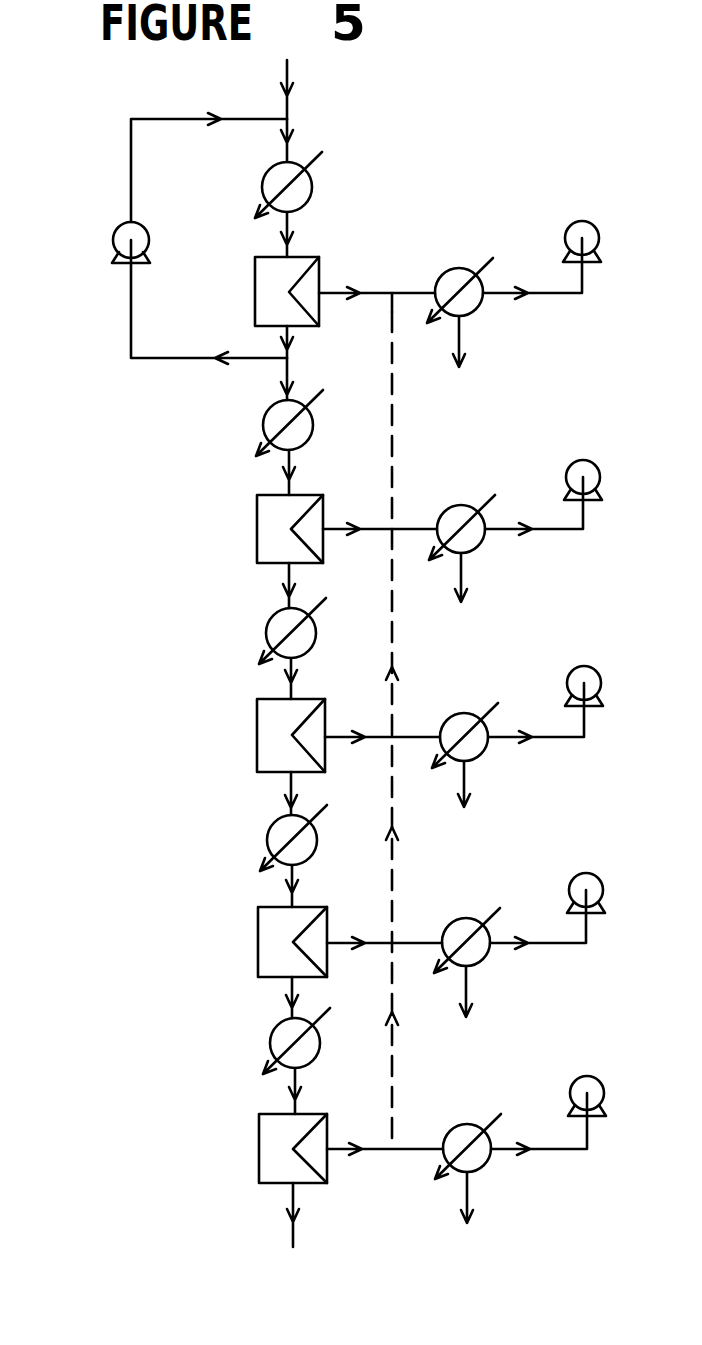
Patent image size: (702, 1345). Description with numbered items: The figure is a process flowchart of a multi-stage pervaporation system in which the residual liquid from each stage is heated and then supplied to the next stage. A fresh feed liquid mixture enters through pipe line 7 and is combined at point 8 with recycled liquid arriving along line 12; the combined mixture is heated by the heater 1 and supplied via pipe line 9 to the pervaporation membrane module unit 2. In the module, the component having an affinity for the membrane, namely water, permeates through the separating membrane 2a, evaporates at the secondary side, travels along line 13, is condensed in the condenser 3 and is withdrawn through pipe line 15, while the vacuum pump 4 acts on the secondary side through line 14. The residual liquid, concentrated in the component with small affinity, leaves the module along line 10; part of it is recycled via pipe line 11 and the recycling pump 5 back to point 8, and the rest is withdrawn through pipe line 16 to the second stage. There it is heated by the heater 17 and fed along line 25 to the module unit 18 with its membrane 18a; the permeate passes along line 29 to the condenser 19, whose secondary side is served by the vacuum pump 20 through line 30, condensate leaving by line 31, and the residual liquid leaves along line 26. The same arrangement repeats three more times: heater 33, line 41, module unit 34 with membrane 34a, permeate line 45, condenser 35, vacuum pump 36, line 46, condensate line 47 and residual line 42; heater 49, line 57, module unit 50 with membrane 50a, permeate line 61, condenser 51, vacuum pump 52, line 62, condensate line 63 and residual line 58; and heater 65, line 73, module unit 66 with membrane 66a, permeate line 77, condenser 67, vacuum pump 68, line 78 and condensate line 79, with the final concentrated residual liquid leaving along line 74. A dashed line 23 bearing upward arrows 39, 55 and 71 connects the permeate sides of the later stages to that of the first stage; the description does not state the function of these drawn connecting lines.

The heater 1 is at (279, 179).
The module unit 2 is at (269, 282).
The pervaporation membrane 2a is at (289, 291).
The condenser 3 is at (452, 278).
The vacuum pump 4 is at (568, 229).
The recycling pump 5 is at (116, 231).
The pipe line 7 is at (301, 89).
The combining point 8 is at (300, 135).
The pipe line 9 is at (300, 234).
The liquid bottoms stream 10 is at (309, 344).
The pipe line 11 is at (209, 331).
The recycle return stream 12 is at (209, 146).
The vapor overhead stream 13 is at (377, 312).
The uncondensed vapor stream 14 is at (532, 298).
The pipe line 15 is at (480, 341).
The pipe line 16 is at (309, 379).
The heater 17 is at (277, 415).
The module unit 18 is at (260, 517).
The pervaporation membrane 18a is at (291, 529).
The condenser 19 is at (456, 515).
The vacuum pump 20 is at (569, 464).
The recycle vapor line 23 is at (419, 721).
The cooled stream to second separator 25 is at (312, 472).
The liquid bottoms stream 26 is at (312, 585).
The vapor overhead stream 29 is at (380, 551).
The uncondensed vapor stream 30 is at (534, 540).
The condensate stream 31 is at (483, 581).
The heater 33 is at (274, 627).
The module unit 34 is at (263, 734).
The pervaporation membrane 34a is at (292, 735).
The condenser 35 is at (456, 723).
The vacuum pump 36 is at (570, 671).
The recycle vapor line 39 is at (415, 655).
The cooled stream to third separator 41 is at (313, 678).
The liquid bottoms stream 42 is at (313, 793).
The vapor overhead stream 45 is at (382, 755).
The uncondensed vapor stream 46 is at (536, 742).
The condensate stream 47 is at (487, 786).
The heater 49 is at (275, 831).
The module unit 50 is at (267, 933).
The pervaporation membrane 50a is at (294, 942).
The condenser 51 is at (460, 928).
The vacuum pump 52 is at (568, 881).
The recycle vapor line 55 is at (415, 837).
The cooled stream to fourth separator 57 is at (315, 886).
The liquid bottoms stream 58 is at (315, 997).
The vapor overhead stream 61 is at (384, 962).
The uncondensed vapor stream 62 is at (538, 951).
The condensate stream 63 is at (488, 999).
The heater 65 is at (277, 1038).
The module unit 66 is at (257, 1145).
The pervaporation membrane 66a is at (294, 1148).
The condenser 67 is at (459, 1134).
The vacuum pump 68 is at (569, 1081).
The recycle vapor line 71 is at (416, 1049).
The cooled stream to fifth separator 73 is at (320, 1091).
The product liquid stream 74 is at (316, 1215).
The vapor overhead stream 77 is at (385, 1168).
The uncondensed vapor stream 78 is at (539, 1155).
The condensate stream 79 is at (489, 1205).